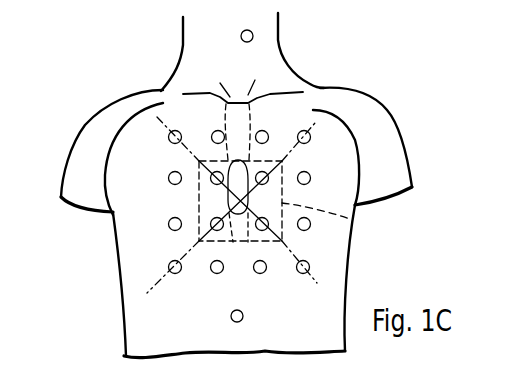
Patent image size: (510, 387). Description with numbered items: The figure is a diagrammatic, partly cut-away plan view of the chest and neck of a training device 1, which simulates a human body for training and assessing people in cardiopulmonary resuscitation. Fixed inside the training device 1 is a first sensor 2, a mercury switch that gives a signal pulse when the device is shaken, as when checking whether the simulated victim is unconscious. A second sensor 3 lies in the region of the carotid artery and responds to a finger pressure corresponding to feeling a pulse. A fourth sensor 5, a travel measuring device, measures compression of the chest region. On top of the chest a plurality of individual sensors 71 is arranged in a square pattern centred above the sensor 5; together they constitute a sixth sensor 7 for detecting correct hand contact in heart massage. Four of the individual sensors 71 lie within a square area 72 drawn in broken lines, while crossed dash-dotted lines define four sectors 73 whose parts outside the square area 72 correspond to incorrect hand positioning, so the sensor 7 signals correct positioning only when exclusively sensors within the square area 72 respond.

The training device 1 is at (111, 261).
The first sensor 2 is at (243, 316).
The second sensor 3 is at (253, 36).
The fourth sensor 5 is at (236, 201).
The sixth sensor 7 is at (202, 271).
The individual sensors 71 is at (310, 266).
The square area 72 is at (353, 219).
The sectors 73 is at (297, 123).